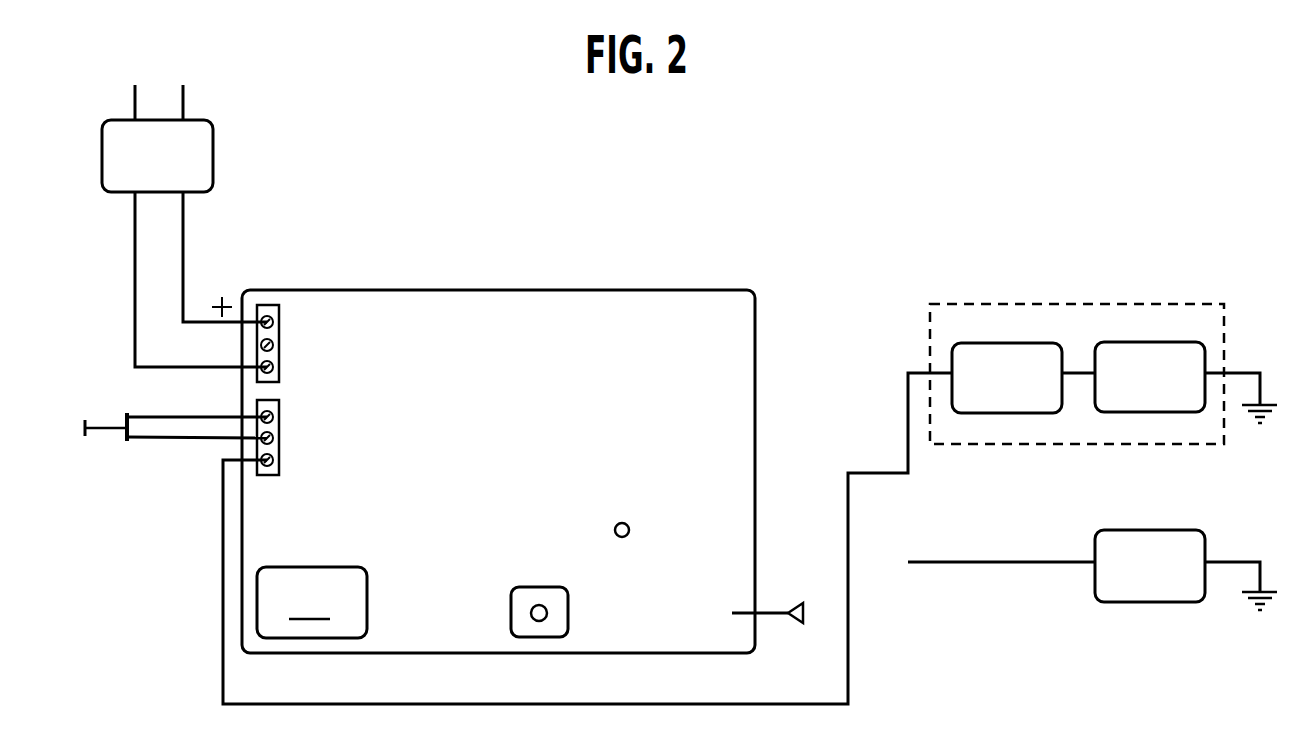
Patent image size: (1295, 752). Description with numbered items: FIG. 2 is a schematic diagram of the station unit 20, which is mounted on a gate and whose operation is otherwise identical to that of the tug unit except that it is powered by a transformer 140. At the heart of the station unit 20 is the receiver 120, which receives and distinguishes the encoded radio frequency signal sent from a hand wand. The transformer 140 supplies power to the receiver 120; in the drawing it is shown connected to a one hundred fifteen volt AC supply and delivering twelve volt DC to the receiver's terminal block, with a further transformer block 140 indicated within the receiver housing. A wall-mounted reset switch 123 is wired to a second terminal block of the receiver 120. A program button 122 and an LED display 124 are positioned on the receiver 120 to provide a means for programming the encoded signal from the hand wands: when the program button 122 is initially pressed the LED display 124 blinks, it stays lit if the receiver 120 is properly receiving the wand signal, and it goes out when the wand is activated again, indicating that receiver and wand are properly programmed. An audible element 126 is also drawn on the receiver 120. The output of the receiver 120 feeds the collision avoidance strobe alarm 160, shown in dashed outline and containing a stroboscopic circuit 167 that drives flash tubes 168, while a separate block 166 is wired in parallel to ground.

The station unit 20 is at (800, 317).
The receiver 120 is at (757, 450).
The program button 122 is at (568, 603).
The reset switch 123 is at (127, 440).
The LED display 124 is at (615, 528).
The speaker 126 is at (795, 605).
The transformer 140 is at (102, 150).
The collision avoidance strobe alarm 160 is at (1073, 303).
The output device 166 is at (1169, 584).
The transmitter 167 is at (1024, 392).
The receiver 168 is at (1169, 391).